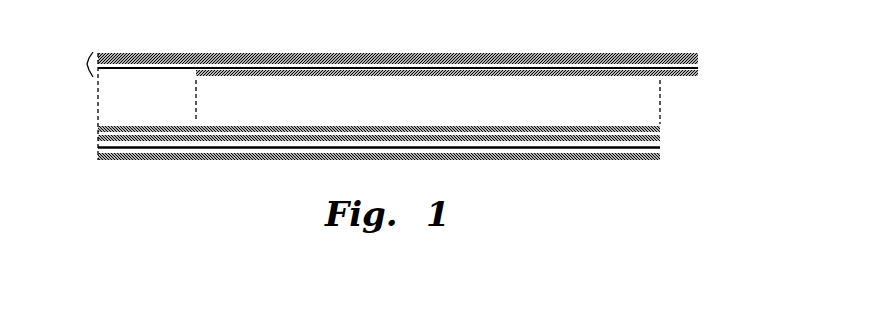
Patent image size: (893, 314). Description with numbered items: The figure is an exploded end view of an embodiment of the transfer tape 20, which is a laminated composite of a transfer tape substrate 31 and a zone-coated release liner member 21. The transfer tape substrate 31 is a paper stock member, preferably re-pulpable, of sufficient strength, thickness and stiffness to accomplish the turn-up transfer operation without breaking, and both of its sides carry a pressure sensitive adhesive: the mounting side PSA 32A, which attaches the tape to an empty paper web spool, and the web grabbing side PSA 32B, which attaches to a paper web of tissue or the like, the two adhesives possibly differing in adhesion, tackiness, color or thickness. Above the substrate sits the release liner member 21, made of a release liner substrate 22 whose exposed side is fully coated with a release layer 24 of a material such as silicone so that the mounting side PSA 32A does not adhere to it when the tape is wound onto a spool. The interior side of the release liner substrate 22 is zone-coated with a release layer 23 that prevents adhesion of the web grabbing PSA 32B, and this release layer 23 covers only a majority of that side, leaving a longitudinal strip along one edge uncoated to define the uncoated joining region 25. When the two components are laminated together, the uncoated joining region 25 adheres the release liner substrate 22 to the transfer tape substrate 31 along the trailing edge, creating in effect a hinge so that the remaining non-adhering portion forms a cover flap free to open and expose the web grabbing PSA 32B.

The transfer tape 20 is at (412, 134).
The release liner member 21 is at (87, 64).
The release liner substrate 22 is at (699, 60).
The zone-coated release layer 23 is at (686, 77).
The release layer 24 is at (633, 52).
The uncoated joining region 25 is at (126, 89).
The transfer tape substrate 31 is at (660, 141).
The mounting side PSA 32A is at (660, 157).
The web grabbing side PSA 32B is at (660, 127).